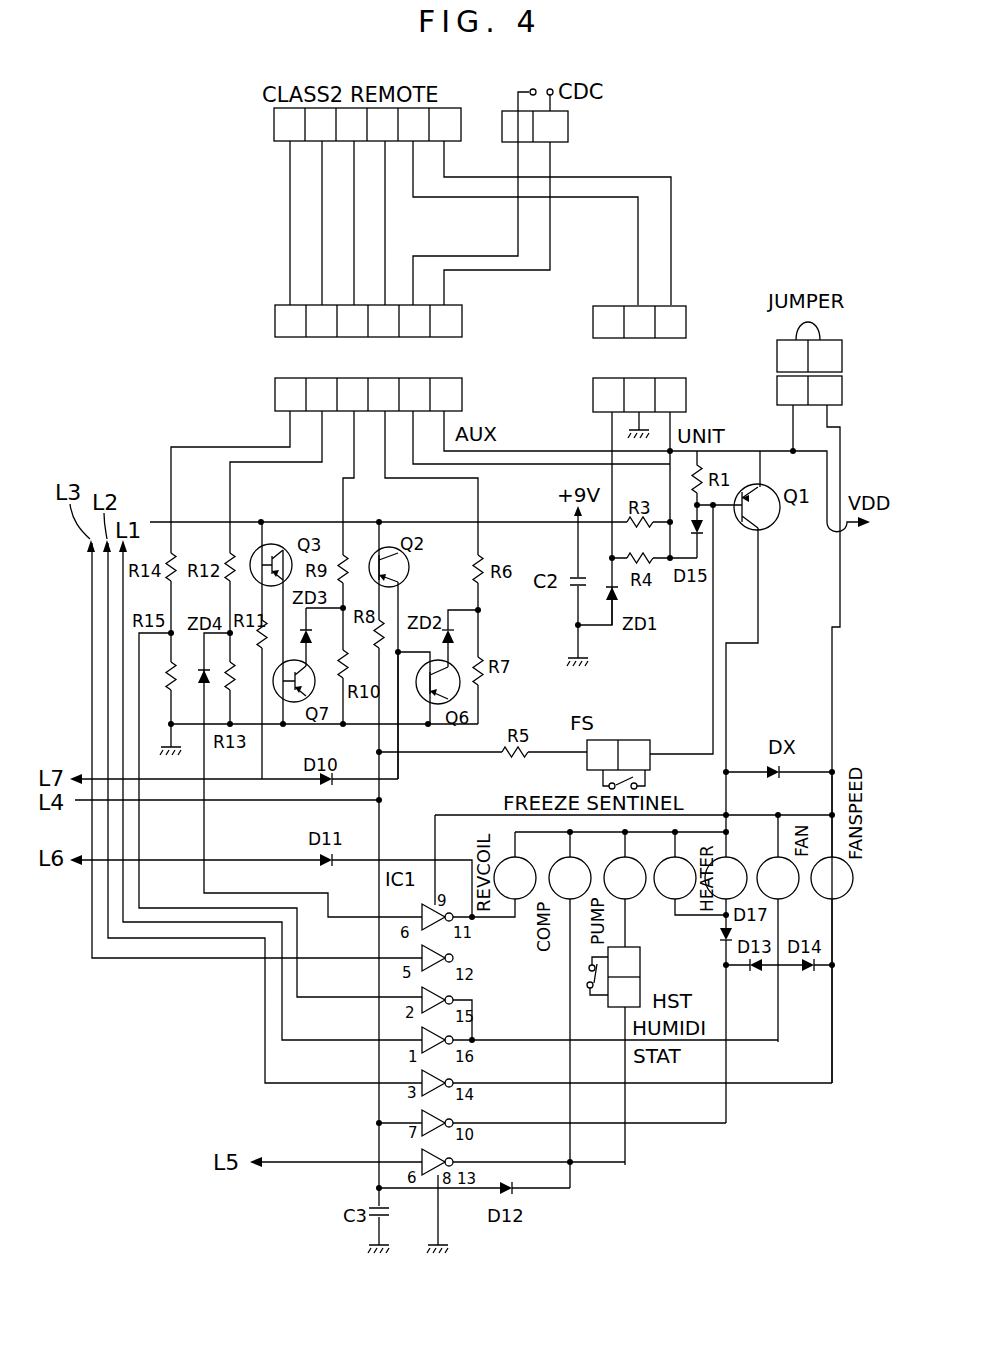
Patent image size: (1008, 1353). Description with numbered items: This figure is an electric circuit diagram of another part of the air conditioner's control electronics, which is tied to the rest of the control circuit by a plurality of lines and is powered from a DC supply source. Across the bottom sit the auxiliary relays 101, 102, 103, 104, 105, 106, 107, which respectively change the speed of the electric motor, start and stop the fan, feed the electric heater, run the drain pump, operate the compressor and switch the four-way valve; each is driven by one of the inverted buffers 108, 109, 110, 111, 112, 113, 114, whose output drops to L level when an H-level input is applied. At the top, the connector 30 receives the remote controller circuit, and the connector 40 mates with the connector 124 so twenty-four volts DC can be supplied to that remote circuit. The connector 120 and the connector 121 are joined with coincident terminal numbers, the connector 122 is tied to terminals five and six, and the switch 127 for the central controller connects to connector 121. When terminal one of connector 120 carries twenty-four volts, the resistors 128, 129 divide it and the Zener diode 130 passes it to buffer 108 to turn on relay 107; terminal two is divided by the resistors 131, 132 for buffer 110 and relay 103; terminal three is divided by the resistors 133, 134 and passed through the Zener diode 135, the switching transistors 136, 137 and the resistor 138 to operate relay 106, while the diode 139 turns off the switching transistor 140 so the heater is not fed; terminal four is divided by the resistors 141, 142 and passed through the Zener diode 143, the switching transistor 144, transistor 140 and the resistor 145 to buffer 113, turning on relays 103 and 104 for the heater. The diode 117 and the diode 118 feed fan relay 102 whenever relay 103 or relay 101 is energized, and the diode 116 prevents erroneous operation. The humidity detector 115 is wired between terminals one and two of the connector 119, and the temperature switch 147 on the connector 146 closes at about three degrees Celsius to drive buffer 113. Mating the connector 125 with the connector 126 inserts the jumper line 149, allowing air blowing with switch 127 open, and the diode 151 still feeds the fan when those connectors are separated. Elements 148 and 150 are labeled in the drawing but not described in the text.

The connector 30 is at (461, 127).
The connector 40 is at (686, 380).
The auxiliary relay 101 is at (847, 899).
The auxiliary relay 102 is at (793, 899).
The auxiliary relay 103 is at (740, 857).
The auxiliary relay 104 is at (657, 899).
The auxiliary relay 105 is at (643, 868).
The auxiliary relay 106 is at (570, 900).
The auxiliary relay 107 is at (520, 900).
The inverted buffer 108 is at (420, 907).
The inverted buffer 109 is at (421, 950).
The inverted buffer 110 is at (421, 990).
The inverted buffer 111 is at (421, 1031).
The inverted buffer 112 is at (421, 1074).
The inverted buffer 113 is at (421, 1114).
The inverted buffer 114 is at (421, 1153).
The humidity detector 115 is at (591, 987).
The diode 116 is at (722, 943).
The diode 117 is at (754, 972).
The diode 118 is at (808, 972).
The connector 119 is at (640, 962).
The connector 120 is at (275, 388).
The connector 121 is at (275, 320).
The connector 122 is at (568, 128).
The connector 124 is at (686, 308).
The connector 125 is at (842, 390).
The connector 126 is at (842, 352).
The switch for the central controller 127 is at (538, 89).
The resistor 128 is at (228, 554).
The resistor 129 is at (238, 700).
The Zener diode 130 is at (203, 686).
The resistor 131 is at (170, 551).
The resistor 132 is at (169, 677).
The resistor 133 is at (312, 634).
The resistor 134 is at (345, 684).
The Zener diode 135 is at (344, 572).
The switching transistor 136 is at (300, 703).
The switching transistor 137 is at (277, 545).
The resistor 138 is at (261, 640).
The diode 139 is at (320, 783).
The switching transistor 140 is at (408, 559).
The resistor 141 is at (482, 558).
The resistor 142 is at (480, 661).
The Zener diode 143 is at (456, 640).
The switching transistor 144 is at (460, 693).
The resistor 145 is at (400, 703).
The connector 146 is at (628, 740).
The temperature switch 147 is at (643, 778).
The resistor R5 148 is at (512, 760).
The jumper line 149 is at (790, 333).
The transistor Q1 150 is at (766, 530).
The diode 151 is at (765, 766).